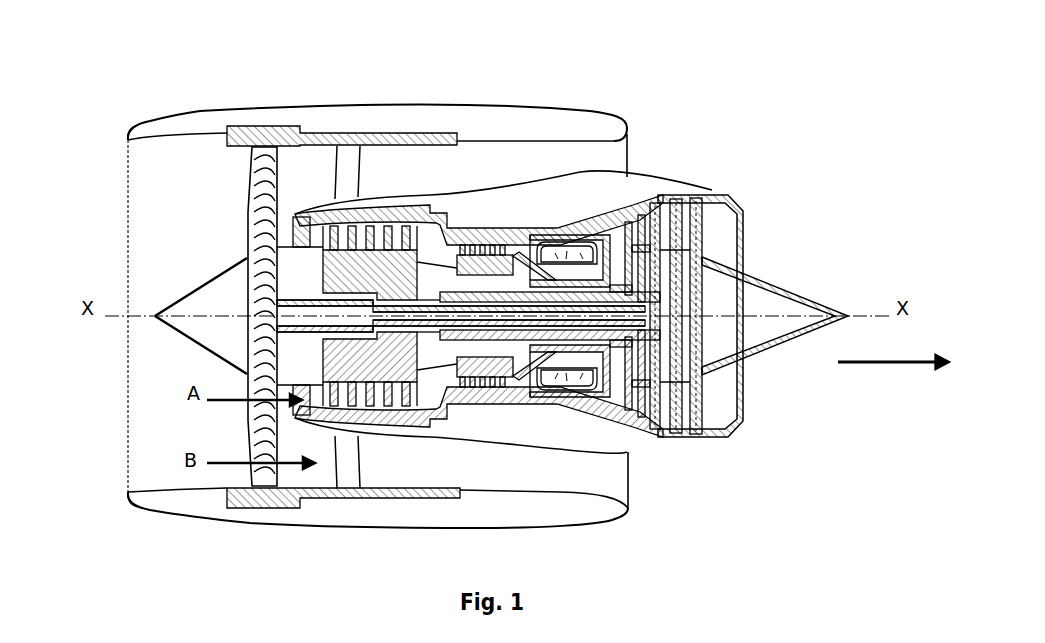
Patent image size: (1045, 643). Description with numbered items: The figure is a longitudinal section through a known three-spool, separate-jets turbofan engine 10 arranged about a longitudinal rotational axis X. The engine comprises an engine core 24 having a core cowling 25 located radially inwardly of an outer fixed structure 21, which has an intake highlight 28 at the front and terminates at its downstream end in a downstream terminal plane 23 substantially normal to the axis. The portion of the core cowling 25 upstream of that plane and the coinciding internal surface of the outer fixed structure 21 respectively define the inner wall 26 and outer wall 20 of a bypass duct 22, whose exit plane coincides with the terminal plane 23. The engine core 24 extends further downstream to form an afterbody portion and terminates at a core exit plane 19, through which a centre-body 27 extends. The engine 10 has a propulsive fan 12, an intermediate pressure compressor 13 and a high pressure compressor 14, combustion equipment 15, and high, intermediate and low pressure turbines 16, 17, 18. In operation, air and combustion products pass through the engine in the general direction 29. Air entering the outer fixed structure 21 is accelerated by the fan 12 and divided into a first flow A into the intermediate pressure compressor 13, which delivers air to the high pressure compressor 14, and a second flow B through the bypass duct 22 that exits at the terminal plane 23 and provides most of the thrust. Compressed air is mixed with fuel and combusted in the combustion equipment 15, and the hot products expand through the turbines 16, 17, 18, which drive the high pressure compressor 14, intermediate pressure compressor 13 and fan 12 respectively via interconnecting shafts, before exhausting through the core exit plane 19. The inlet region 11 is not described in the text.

The turbofan engine 10 is at (197, 108).
The air inlet 11 is at (181, 137).
The propulsive fan 12 is at (262, 190).
The intermediate pressure compressor 13 is at (369, 403).
The high pressure compressor 14 is at (488, 387).
The combustion equipment 15 is at (563, 390).
The high pressure turbine 16 is at (602, 395).
The intermediate pressure turbine 17 is at (636, 408).
The low pressure turbine 18 is at (678, 424).
The core exit plane 19 is at (744, 398).
The outer wall of bypass duct 20 is at (545, 138).
The outer fixed structure 21 is at (415, 105).
The bypass duct 22 is at (428, 176).
The downstream terminal plane 23 is at (630, 137).
The engine core 24 is at (583, 170).
The core cowling 25 is at (663, 180).
The inner wall of bypass duct 26 is at (520, 183).
The centre-body 27 is at (780, 288).
The intake highlight 28 is at (128, 140).
The general direction of flow 29 is at (893, 365).